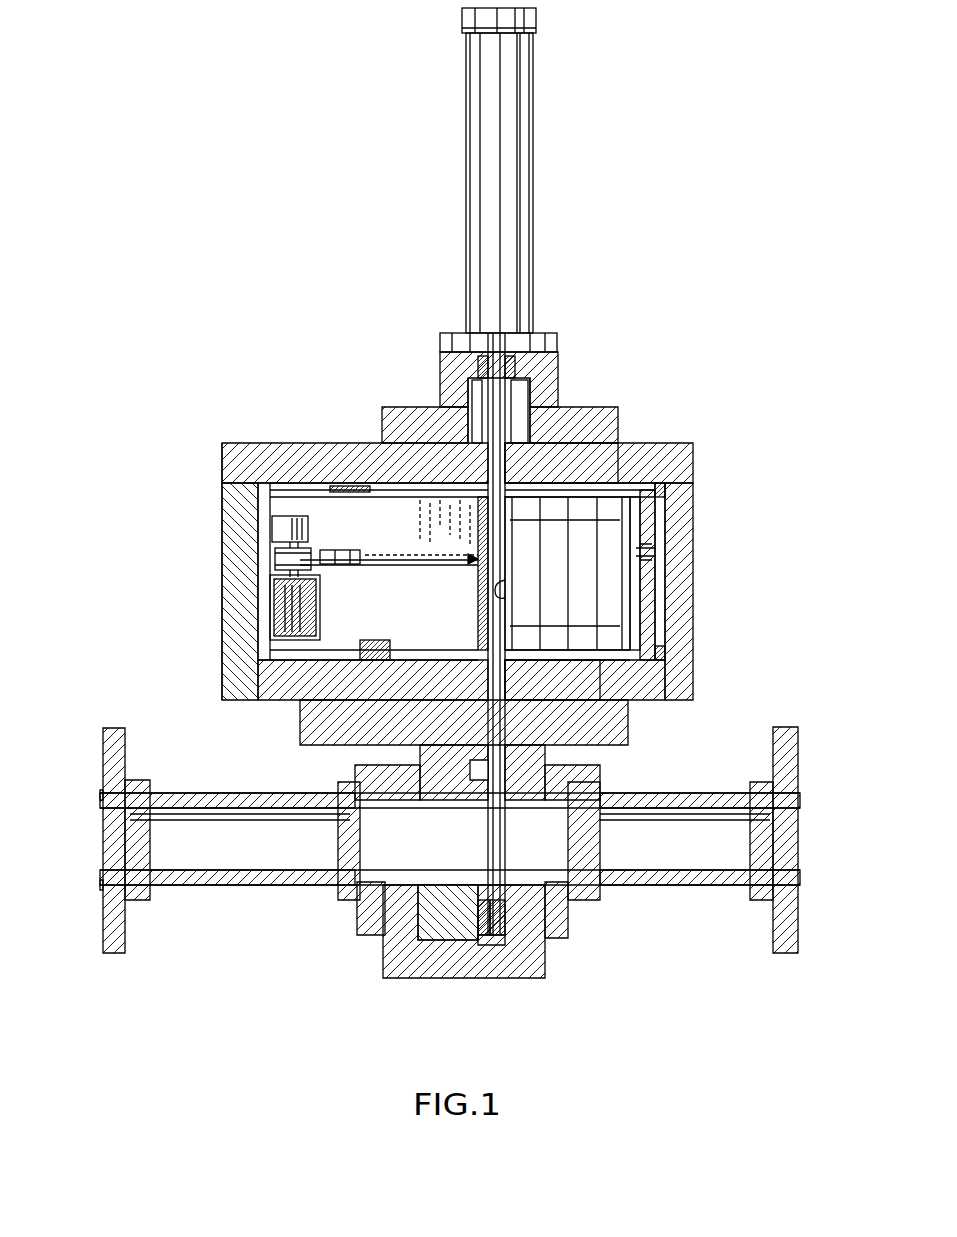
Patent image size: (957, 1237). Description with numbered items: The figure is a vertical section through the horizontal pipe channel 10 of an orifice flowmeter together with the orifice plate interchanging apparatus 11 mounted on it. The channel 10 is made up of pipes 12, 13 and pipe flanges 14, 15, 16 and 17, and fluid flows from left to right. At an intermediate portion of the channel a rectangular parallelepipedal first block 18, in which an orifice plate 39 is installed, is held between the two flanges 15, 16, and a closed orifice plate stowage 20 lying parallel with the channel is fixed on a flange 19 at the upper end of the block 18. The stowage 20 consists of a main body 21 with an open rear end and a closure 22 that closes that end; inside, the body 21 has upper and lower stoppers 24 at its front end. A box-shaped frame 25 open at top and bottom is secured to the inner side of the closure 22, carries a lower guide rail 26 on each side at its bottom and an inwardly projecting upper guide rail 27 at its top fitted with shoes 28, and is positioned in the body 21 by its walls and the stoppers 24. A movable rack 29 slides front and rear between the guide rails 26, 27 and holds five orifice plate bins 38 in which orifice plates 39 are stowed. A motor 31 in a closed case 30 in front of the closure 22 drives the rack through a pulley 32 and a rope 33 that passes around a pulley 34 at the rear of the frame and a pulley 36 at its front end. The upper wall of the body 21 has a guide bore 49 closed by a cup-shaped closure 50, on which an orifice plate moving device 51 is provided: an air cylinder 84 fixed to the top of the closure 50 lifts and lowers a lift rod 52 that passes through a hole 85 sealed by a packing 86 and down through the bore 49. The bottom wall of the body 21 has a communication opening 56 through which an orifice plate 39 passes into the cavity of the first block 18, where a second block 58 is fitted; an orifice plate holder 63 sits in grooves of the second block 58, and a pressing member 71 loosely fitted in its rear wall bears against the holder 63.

The pipe channel 10 is at (218, 828).
The orifice plate interchanging apparatus 11 is at (682, 270).
The pipe 12 is at (700, 885).
The pipe 13 is at (222, 885).
The pipe flange 14 is at (788, 953).
The pipe flange 15 is at (558, 938).
The pipe flange 16 is at (368, 935).
The pipe flange 17 is at (118, 953).
The first block 18 is at (412, 978).
The flange 19 is at (305, 712).
The orifice plate stowage 20 is at (700, 458).
The main body 21 is at (672, 488).
The closure 22 is at (230, 500).
The stopper 24 is at (663, 492).
The frame 25 is at (658, 606).
The lower guide rail 26 is at (380, 650).
The upper guide rail 27 is at (395, 500).
The shoe 28 is at (303, 482).
The movable rack 29 is at (636, 625).
The closed case 30 is at (320, 604).
The motor 31 is at (272, 610).
The pulley 32 is at (300, 560).
The rope 33 is at (398, 568).
The pulley 34 is at (355, 550).
The pulley 36 is at (660, 541).
The orifice plate bin 38 is at (486, 600).
The orifice plate 39 is at (585, 630).
The guide bore 49 is at (510, 462).
The cup-shaped closure 50 is at (387, 415).
The orifice plate moving device 51 is at (538, 279).
The lift rod 52 is at (518, 398).
The communication opening 56 is at (510, 683).
The second block 58 is at (438, 940).
The orifice plate holder 63 is at (470, 805).
The pressing member 71 is at (470, 940).
The air cylinder 84 is at (480, 200).
The hole 85 is at (475, 395).
The packing 86 is at (480, 368).